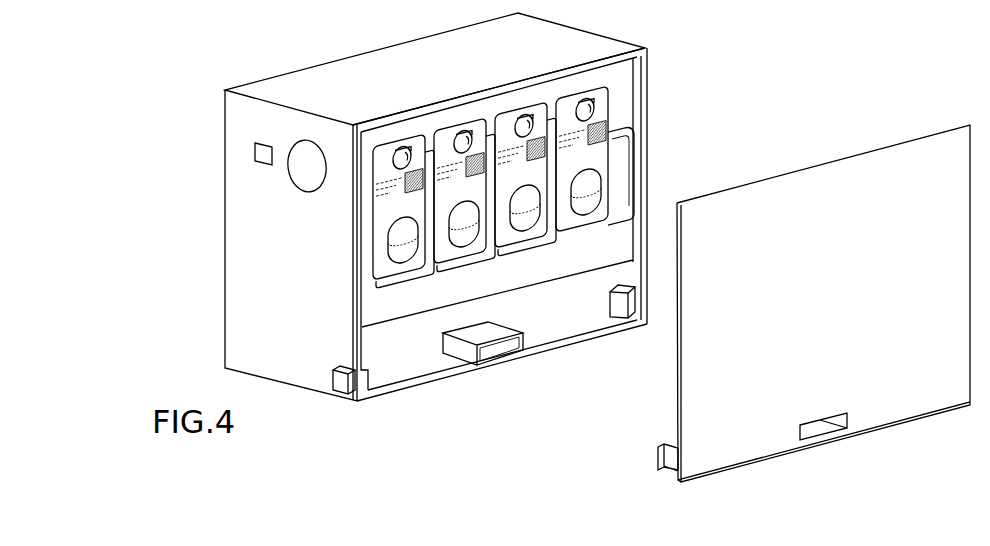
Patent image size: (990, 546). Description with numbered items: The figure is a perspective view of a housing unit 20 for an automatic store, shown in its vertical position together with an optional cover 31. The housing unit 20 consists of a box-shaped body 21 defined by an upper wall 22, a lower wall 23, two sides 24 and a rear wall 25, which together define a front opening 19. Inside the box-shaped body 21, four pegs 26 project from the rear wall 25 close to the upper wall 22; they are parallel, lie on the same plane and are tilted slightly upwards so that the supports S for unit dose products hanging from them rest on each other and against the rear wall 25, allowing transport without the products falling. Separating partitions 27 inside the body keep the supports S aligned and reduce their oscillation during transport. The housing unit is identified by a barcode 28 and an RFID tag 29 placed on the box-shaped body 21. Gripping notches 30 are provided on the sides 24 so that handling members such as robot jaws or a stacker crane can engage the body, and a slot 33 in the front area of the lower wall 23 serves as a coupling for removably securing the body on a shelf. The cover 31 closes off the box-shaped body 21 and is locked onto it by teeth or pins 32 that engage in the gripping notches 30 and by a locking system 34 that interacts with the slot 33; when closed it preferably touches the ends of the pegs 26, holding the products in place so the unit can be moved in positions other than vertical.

The front opening 19 is at (565, 327).
The housing unit 20 is at (660, 83).
The box-shaped body 21 is at (597, 42).
The upper wall 22 is at (558, 40).
The lower wall 23 is at (397, 373).
The sides 24 is at (242, 290).
The rear wall 25 is at (500, 287).
The pegs 26 is at (587, 107).
The separating partitions 27 is at (370, 228).
The barcode 28 is at (255, 153).
The RFID tag 29 is at (303, 145).
The gripping notches 30 is at (347, 400).
The cover 31 is at (762, 445).
The teeth or pins 32 is at (657, 460).
The slot 33 is at (490, 357).
The locking system 34 is at (827, 428).
The supports for unit dose products S is at (595, 162).